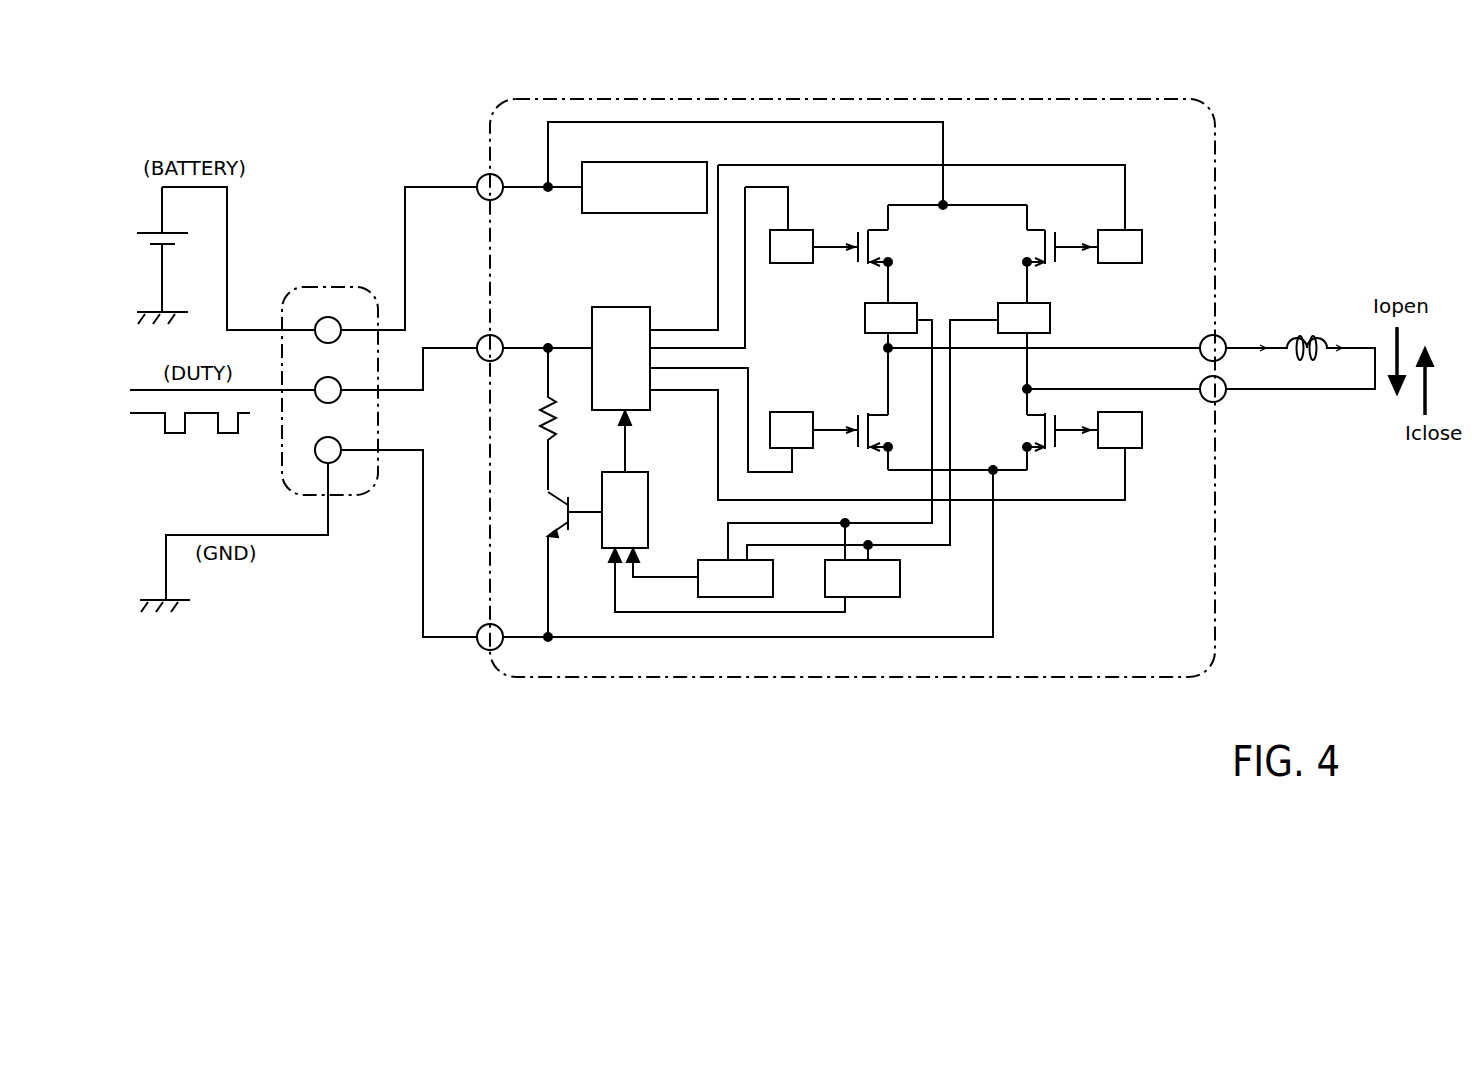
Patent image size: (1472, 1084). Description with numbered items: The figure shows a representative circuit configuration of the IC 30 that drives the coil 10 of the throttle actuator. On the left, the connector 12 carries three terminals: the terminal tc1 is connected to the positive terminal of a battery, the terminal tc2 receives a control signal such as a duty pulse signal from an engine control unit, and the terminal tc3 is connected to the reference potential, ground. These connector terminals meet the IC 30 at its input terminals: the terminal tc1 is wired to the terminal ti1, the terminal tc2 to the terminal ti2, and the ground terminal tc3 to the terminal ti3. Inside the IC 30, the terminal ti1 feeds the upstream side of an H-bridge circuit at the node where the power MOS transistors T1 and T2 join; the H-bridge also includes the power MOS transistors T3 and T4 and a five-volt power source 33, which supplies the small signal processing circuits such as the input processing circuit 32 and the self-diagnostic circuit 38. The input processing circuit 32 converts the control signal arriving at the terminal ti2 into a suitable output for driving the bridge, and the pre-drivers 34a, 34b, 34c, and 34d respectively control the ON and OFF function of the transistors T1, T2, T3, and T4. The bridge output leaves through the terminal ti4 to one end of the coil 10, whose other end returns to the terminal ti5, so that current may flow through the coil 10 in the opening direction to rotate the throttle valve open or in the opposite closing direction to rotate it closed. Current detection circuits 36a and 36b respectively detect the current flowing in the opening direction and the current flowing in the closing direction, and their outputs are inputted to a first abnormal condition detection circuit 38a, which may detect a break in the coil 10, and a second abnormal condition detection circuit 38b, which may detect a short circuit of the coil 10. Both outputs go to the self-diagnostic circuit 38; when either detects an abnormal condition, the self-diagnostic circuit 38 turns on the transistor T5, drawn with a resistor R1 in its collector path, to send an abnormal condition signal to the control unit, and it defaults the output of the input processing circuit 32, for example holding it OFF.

The coil 10 is at (1310, 328).
The connector 12 is at (345, 283).
The IC 30 is at (1222, 160).
The input processing circuit 32 is at (616, 303).
The 5V power source 33 is at (652, 160).
The pre-driver 34a is at (776, 267).
The pre-driver 34b is at (1106, 226).
The pre-driver 34c is at (793, 408).
The pre-driver 34d is at (1097, 457).
The current detection circuit 36a is at (904, 300).
The current detection circuit 36b is at (1054, 317).
The self-diagnostic circuit 38 is at (657, 505).
The first abnormal condition detection circuit 38a is at (722, 580).
The second abnormal condition detection circuit 38b is at (870, 580).
The terminal tc1 is at (318, 320).
The terminal tc2 is at (322, 408).
The terminal tc3 is at (340, 462).
The terminal ti1 is at (476, 176).
The terminal ti2 is at (472, 333).
The terminal ti3 is at (472, 631).
The terminal ti4 is at (1232, 337).
The terminal ti5 is at (1232, 403).
The power MOS transistor T1 is at (872, 266).
The power MOS transistor T2 is at (1046, 266).
The power MOS transistor T3 is at (867, 409).
The power MOS transistor T4 is at (1044, 429).
The transistor T5 is at (556, 514).
The resistor R1 is at (532, 419).